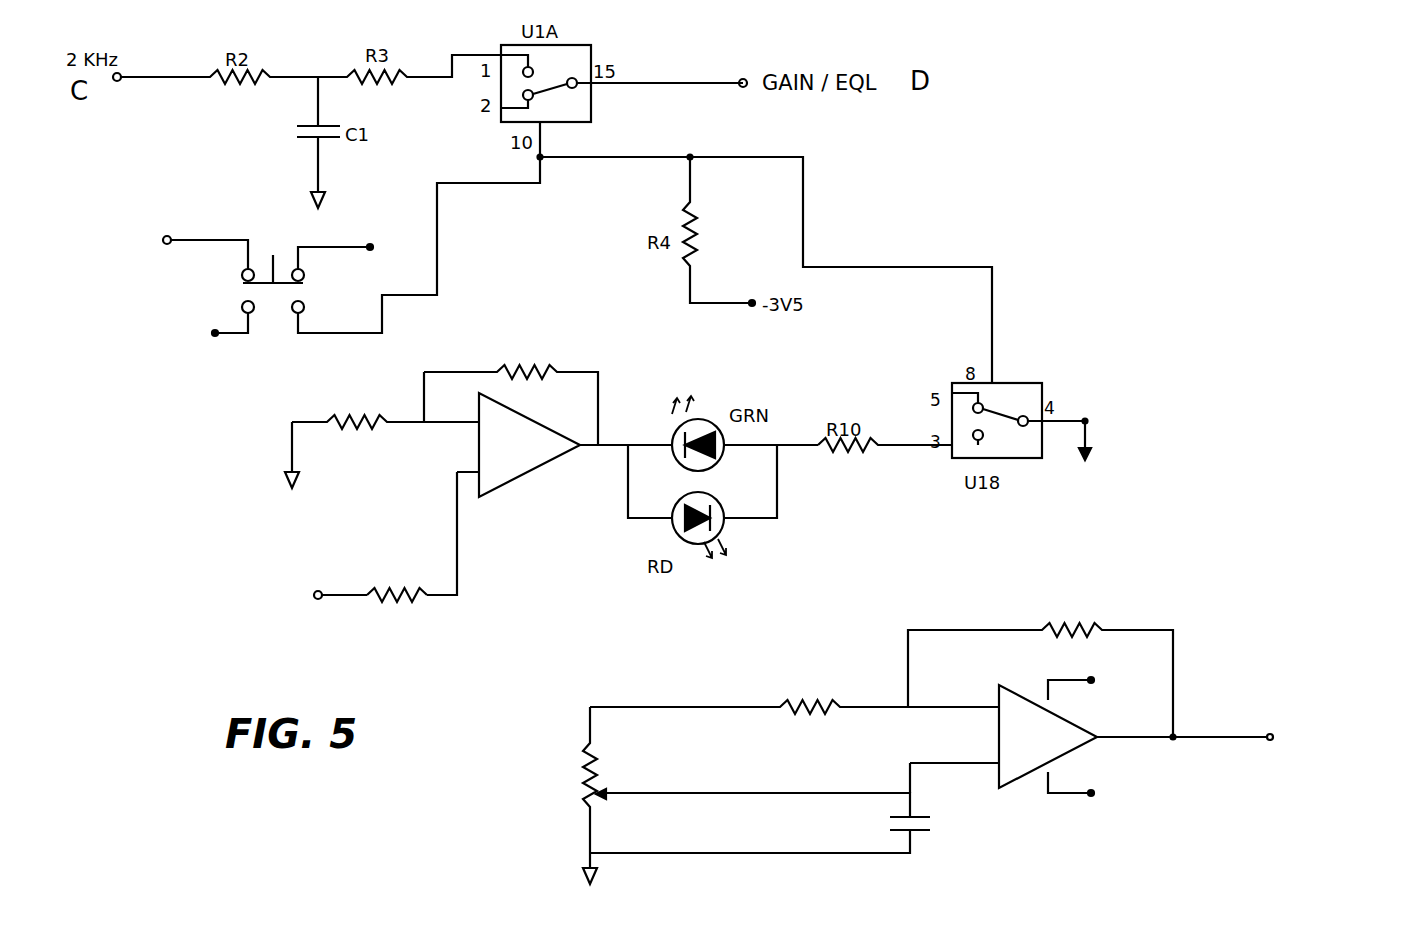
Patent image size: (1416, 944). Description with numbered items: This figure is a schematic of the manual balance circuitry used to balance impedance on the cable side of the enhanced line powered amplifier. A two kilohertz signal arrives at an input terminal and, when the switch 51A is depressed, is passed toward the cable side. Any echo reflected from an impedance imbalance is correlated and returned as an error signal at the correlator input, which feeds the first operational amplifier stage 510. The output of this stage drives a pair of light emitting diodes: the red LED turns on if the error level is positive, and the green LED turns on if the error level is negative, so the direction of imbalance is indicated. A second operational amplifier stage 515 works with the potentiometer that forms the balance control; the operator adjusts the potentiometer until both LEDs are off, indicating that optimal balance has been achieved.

The operational amplifier U2A 510 is at (511, 481).
The operational amplifier U2B 515 is at (1022, 697).
The switch 51A is at (267, 282).